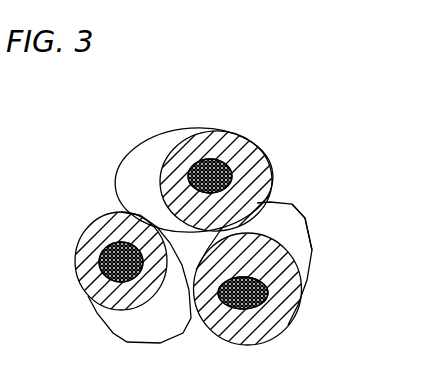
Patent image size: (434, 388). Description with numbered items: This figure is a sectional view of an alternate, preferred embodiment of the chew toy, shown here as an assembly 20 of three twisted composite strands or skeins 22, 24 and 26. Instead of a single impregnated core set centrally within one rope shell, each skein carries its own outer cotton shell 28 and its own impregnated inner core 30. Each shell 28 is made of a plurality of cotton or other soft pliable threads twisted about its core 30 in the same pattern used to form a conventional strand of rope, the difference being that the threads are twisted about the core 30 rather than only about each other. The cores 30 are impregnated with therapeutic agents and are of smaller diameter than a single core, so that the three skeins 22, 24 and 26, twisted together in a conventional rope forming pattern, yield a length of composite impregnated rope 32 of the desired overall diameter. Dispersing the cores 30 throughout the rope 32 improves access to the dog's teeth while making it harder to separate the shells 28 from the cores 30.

The optical fiber bundle 20 is at (217, 194).
The composite skein 22 is at (273, 162).
The composite skein 24 is at (224, 343).
The composite skein 26 is at (99, 213).
The outer cotton shell 28 is at (183, 128).
The impregnated inner core 30 is at (214, 162).
The composite impregnated rope 32 is at (303, 215).